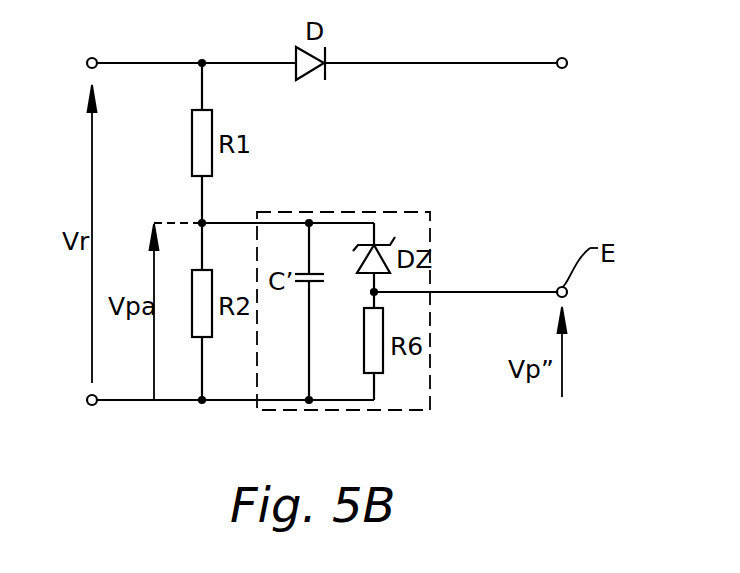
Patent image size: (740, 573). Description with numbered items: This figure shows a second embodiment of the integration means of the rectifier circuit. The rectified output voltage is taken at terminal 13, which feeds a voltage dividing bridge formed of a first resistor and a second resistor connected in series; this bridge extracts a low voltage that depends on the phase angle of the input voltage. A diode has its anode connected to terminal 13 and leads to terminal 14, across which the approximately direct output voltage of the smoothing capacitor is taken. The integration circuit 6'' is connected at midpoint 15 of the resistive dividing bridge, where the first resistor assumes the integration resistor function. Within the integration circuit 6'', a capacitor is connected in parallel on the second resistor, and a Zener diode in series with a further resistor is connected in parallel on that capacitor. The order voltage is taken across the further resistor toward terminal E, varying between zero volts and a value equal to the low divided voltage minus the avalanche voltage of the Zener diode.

The rectified output terminal 13 is at (88, 58).
The terminal of capacitor C 14 is at (566, 58).
The midpoint of resistive dividing bridge 15 is at (202, 200).
The integration circuit 6'' is at (379, 298).